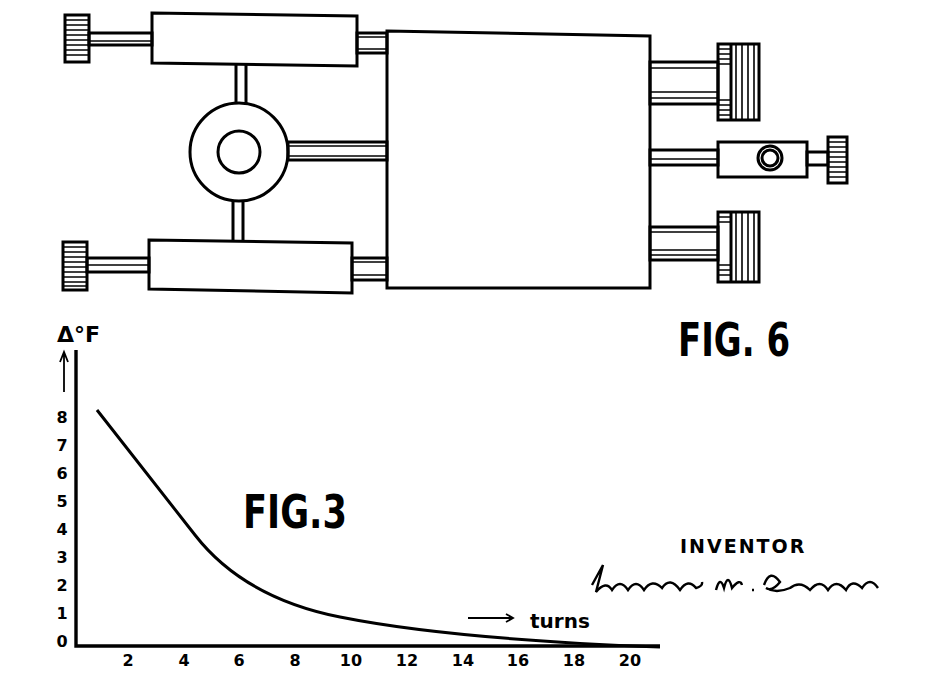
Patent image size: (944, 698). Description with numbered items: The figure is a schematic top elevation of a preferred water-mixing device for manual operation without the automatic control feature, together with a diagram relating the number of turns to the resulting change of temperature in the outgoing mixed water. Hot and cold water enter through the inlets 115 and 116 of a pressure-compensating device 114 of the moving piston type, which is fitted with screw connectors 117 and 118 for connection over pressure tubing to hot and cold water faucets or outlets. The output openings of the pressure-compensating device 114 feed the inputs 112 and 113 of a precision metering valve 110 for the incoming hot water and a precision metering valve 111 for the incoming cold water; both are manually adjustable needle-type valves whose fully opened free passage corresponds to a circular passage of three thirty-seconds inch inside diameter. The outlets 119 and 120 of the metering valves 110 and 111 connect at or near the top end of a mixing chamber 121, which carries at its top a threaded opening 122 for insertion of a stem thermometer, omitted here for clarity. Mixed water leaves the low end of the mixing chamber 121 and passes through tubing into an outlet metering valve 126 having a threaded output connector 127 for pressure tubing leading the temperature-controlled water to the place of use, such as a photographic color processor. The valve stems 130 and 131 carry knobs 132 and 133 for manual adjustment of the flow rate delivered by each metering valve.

The precision metering valve 110 is at (182, 67).
The precision metering valve 111 is at (180, 243).
The input 112 is at (366, 58).
The input 113 is at (366, 257).
The pressure-compensating device 114 is at (521, 288).
The inlet 115 is at (667, 62).
The inlet 116 is at (668, 228).
The screw connector 117 is at (759, 60).
The screw connector 118 is at (759, 222).
The outlet 119 is at (244, 220).
The outlet 120 is at (247, 84).
The mixing chamber 121 is at (277, 170).
The threaded opening 122 is at (218, 155).
The outlet metering valve 126 is at (805, 142).
The threaded output connector 127 is at (781, 134).
The valve stem 130 is at (110, 257).
The valve stem 131 is at (118, 46).
The knob 132 is at (70, 241).
The knob 133 is at (74, 63).